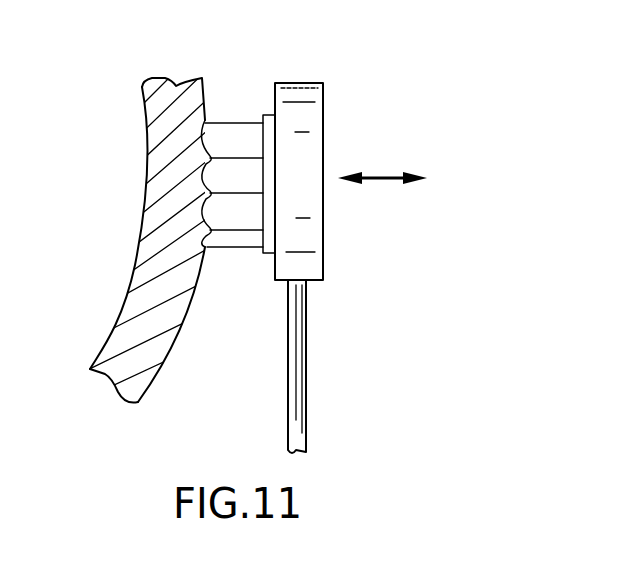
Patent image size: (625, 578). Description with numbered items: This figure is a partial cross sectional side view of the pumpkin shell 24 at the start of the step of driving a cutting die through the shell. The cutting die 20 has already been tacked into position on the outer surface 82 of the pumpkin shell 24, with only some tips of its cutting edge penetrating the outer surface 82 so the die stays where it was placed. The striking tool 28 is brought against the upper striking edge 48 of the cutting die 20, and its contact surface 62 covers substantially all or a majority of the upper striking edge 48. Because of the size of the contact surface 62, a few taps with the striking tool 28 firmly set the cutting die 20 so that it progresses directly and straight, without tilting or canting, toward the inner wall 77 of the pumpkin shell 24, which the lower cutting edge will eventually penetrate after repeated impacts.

The cutting die 20 is at (228, 130).
The pumpkin shell 24 is at (129, 218).
The striking tool 28 is at (347, 237).
The upper striking edge 48 is at (275, 190).
The contact surface 62 is at (276, 86).
The inner wall 77 is at (105, 335).
The outer surface 82 is at (165, 352).